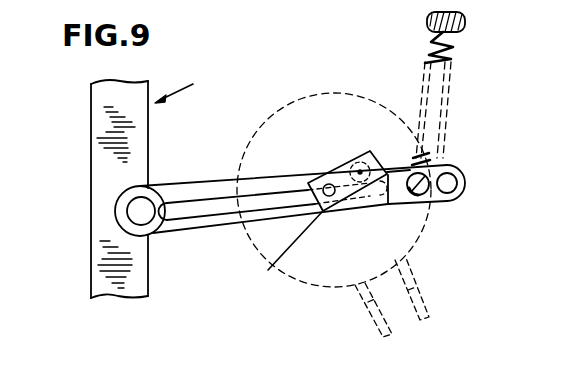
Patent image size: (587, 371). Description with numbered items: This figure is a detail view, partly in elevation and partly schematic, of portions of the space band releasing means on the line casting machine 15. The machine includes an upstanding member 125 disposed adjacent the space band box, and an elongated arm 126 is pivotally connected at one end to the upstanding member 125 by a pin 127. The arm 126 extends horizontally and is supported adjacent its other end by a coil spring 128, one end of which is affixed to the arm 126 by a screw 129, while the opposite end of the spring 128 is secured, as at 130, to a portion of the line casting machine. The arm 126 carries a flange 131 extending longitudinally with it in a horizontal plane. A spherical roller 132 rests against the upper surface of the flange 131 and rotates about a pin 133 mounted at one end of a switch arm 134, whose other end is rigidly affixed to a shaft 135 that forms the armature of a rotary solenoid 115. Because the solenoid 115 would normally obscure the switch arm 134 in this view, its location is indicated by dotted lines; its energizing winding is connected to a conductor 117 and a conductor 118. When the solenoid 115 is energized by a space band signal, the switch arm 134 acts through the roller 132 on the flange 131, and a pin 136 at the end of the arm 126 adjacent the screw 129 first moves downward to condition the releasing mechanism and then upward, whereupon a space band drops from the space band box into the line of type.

The line casting machine 15 is at (186, 85).
The rotary solenoid 115 is at (282, 96).
The conductor 117 is at (420, 297).
The conductor 118 is at (374, 322).
The upstanding member 125 is at (91, 121).
The elongated arm 126 is at (193, 183).
The pin 127 is at (142, 218).
The coil spring 128 is at (446, 106).
The screw 129 is at (418, 195).
The spring securing point 130 is at (457, 37).
The flange 131 is at (229, 213).
The spherical roller 132 is at (371, 150).
The pin 133 is at (358, 171).
The switch arm 134 is at (343, 205).
The shaft 135 is at (283, 254).
The pin 136 is at (458, 183).